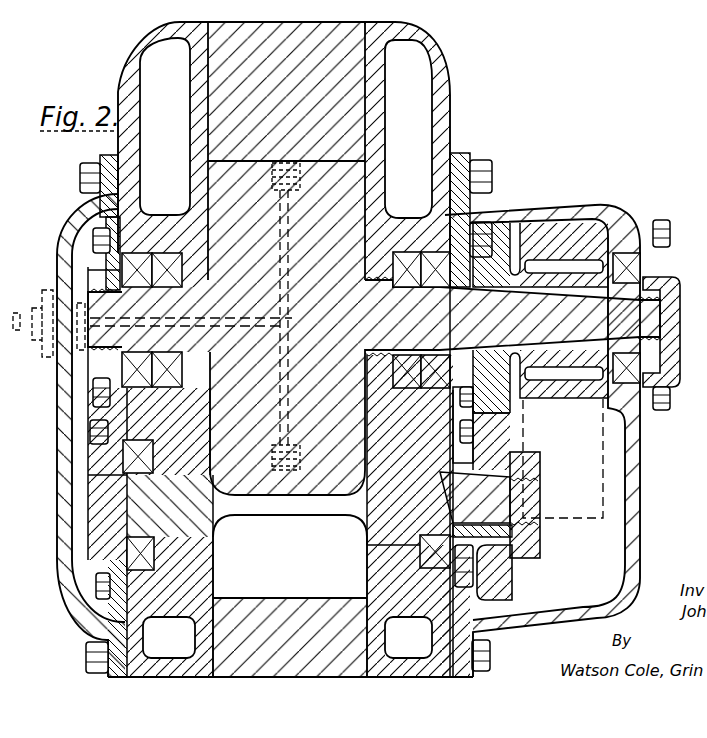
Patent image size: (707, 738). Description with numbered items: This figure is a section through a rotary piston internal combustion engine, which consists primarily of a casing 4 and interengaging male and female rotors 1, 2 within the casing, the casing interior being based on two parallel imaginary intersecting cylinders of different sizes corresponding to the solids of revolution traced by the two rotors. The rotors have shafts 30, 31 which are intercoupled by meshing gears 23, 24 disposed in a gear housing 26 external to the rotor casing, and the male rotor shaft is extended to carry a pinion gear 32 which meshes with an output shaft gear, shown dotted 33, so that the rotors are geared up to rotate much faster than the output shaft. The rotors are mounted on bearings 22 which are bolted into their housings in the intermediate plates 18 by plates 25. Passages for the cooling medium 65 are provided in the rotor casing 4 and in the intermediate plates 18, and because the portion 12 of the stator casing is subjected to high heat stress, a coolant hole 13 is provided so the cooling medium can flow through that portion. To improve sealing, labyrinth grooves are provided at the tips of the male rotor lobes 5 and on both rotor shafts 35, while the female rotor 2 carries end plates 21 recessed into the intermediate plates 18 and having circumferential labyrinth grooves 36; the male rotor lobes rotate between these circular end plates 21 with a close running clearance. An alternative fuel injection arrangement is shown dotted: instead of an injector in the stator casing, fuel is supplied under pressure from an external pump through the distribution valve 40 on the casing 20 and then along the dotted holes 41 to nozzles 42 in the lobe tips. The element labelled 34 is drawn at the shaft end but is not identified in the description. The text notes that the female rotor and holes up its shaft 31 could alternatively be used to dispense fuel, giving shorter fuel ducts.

The male rotor 1 is at (236, 190).
The female rotor 2 is at (293, 500).
The casing 4 is at (333, 68).
The male rotor lobes 5 is at (407, 143).
The portion of the stator casing 12 is at (423, 8).
The coolant hole 13 is at (459, 10).
The intermediate plates 18 is at (135, 70).
The casing 20 is at (72, 272).
The end plates 21 is at (222, 592).
The bearings 22 is at (96, 240).
The meshing gear 23 is at (500, 577).
The meshing gear 24 is at (497, 258).
The plates 25 is at (110, 420).
The gear housing 26 is at (597, 608).
The rotor shaft 30 is at (522, 348).
The rotor shaft 31 is at (538, 522).
The pinion gear 32 is at (605, 218).
The output shaft gear 33 is at (603, 495).
The end cap 34 is at (645, 270).
The rotor shafts 35 is at (380, 352).
The circumferential labyrinth grooves 36 is at (167, 652).
The distribution valve 40 is at (42, 310).
The holes 41 is at (280, 362).
The nozzles 42 is at (302, 455).
The passages for the cooling medium 65 is at (410, 90).